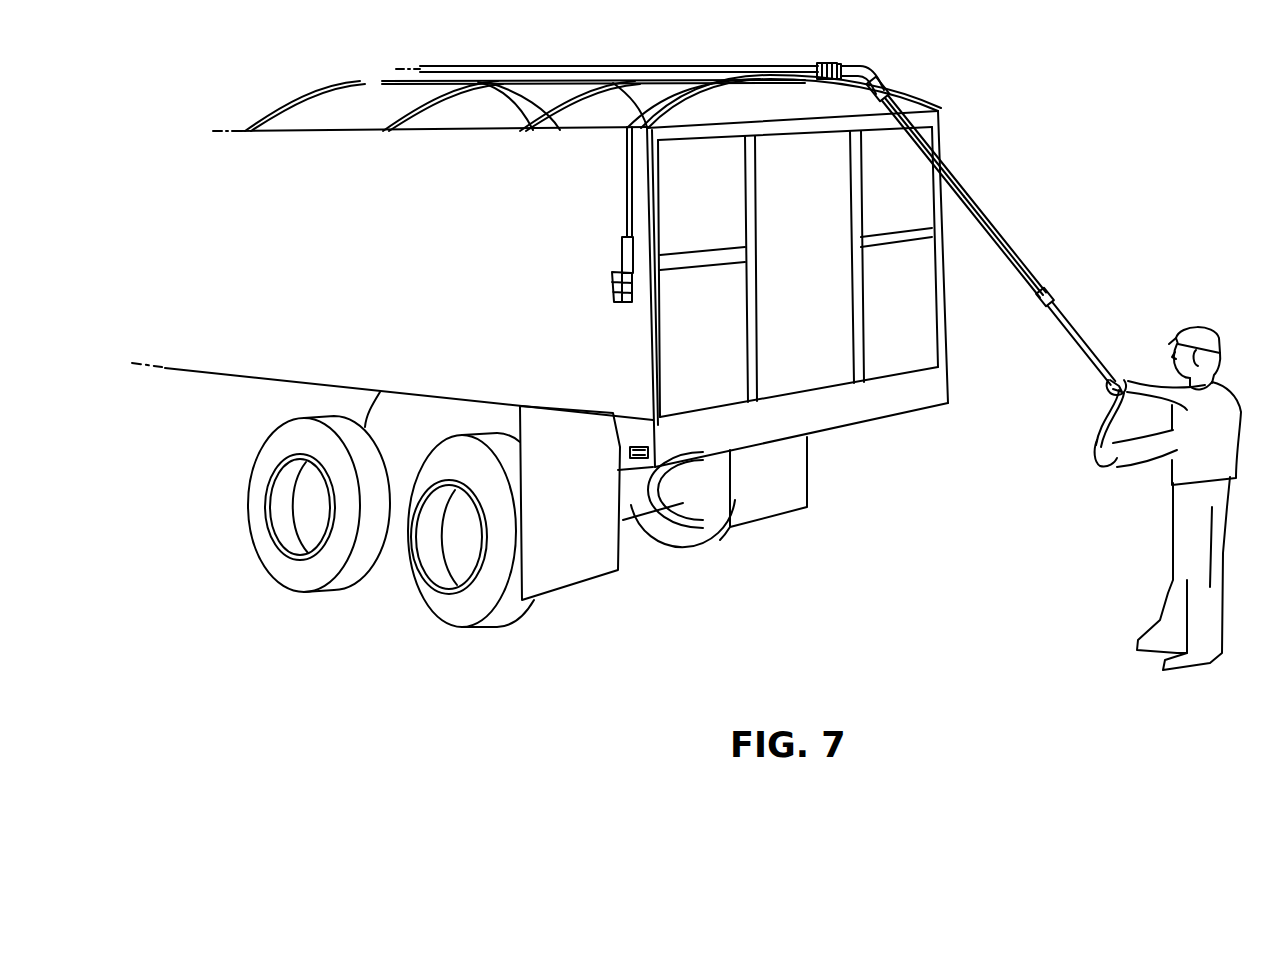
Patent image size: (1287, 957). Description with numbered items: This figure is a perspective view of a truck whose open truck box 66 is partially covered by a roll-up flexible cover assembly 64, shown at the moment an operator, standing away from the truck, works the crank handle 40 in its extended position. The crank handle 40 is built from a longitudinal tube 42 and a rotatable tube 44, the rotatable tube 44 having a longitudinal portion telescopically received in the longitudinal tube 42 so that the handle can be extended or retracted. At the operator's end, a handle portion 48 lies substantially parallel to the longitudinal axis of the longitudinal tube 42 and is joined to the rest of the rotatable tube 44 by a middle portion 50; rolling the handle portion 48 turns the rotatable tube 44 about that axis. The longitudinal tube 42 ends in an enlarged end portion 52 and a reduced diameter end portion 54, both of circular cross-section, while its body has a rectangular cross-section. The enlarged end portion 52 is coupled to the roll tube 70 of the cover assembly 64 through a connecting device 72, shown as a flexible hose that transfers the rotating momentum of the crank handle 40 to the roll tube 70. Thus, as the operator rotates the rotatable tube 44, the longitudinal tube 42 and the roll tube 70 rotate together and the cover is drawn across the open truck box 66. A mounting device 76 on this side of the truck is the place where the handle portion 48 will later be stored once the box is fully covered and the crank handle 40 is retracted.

The crank handle 40 is at (957, 174).
The longitudinal tube 42 is at (1003, 238).
The rotatable tube 44 is at (1078, 330).
The handle portion 48 is at (1098, 446).
The middle portion 50 is at (1101, 420).
The enlarged end portion 52 is at (889, 92).
The reduced diameter end portion 54 is at (1047, 287).
The roll-up flexible cover assembly 64 is at (676, 67).
The open truck box 66 is at (489, 107).
The roll tube 70 is at (827, 62).
The connecting device 72 is at (868, 72).
The mounting device 76 is at (630, 462).